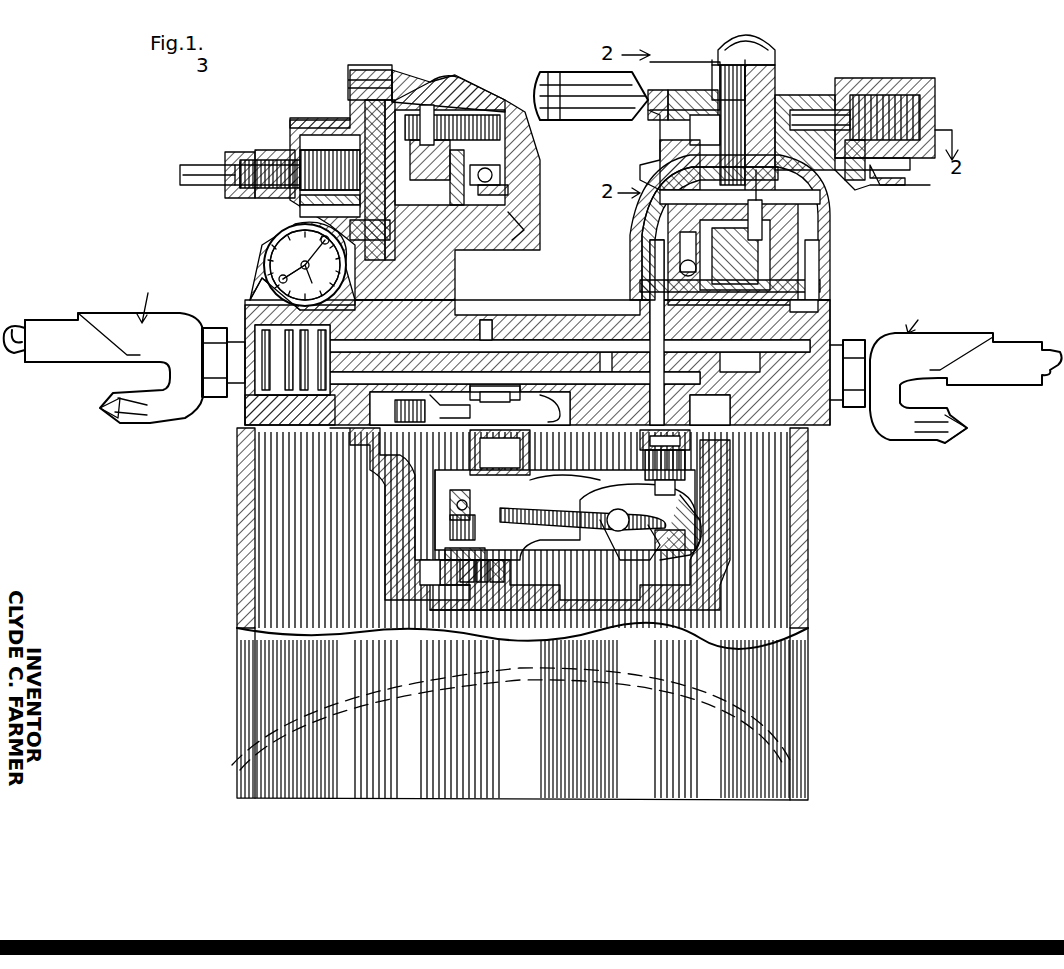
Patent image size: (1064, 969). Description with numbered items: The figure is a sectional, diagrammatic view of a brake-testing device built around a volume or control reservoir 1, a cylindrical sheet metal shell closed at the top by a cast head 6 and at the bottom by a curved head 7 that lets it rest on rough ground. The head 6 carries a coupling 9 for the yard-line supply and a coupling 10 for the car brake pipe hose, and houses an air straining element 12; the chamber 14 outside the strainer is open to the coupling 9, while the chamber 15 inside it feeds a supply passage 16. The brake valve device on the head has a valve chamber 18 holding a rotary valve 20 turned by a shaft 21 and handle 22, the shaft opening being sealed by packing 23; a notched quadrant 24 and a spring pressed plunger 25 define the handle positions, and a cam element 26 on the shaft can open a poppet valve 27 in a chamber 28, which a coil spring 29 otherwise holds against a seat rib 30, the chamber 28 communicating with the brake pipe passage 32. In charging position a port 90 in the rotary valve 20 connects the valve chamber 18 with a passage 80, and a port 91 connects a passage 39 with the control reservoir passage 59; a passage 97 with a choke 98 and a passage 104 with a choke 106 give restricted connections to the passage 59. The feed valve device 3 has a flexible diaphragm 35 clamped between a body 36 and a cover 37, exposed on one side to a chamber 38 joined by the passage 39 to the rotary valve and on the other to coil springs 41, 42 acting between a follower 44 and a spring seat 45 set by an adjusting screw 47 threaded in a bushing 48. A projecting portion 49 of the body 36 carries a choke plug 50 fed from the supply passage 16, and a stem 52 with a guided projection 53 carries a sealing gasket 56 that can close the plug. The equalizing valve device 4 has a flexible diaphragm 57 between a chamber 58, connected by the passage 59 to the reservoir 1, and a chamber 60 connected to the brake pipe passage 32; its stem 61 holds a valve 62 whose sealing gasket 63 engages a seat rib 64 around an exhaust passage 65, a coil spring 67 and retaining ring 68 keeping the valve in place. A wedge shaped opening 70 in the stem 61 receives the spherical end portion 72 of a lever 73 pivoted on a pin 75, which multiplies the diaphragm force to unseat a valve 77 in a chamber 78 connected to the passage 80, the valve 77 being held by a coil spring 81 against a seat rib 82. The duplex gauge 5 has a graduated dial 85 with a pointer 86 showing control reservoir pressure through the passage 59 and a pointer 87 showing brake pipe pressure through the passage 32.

The volume or control reservoir 1 is at (234, 593).
The feed valve device 3 is at (520, 222).
The equalizing valve device 4 is at (425, 566).
The duplex gauge 5 is at (258, 262).
The head 6 is at (560, 372).
The curved head 7 is at (262, 716).
The coupling 9 is at (88, 355).
The coupling 10 is at (1040, 385).
The air straining element 12 is at (262, 400).
The chamber 14 is at (215, 328).
The chamber 15 is at (262, 422).
The supply passage 16 is at (418, 340).
The valve chamber 18 is at (640, 200).
The rotary valve 20 is at (668, 242).
The shaft 21 is at (672, 130).
The handle 22 is at (548, 88).
The packing 23 is at (700, 170).
The quadrant 24 is at (670, 88).
The spring pressed plunger 25 is at (652, 90).
The cam element 26 is at (778, 95).
The poppet valve 27 is at (840, 95).
The chamber 28 is at (860, 190).
The coil spring 29 is at (900, 95).
The seat rib 30 is at (900, 188).
The brake pipe passage 32 is at (648, 380).
The flexible diaphragm 35 is at (470, 95).
The body 36 is at (478, 130).
The cover 37 is at (310, 140).
The chamber 38 is at (430, 120).
The passage 39 is at (500, 280).
The coil spring 41 is at (300, 212).
The coil spring 42 is at (300, 202).
The follower 44 is at (345, 130).
The spring seat 45 is at (268, 148).
The adjusting screw 47 is at (210, 165).
The bushing 48 is at (235, 152).
The projecting portion 49 is at (486, 112).
The choke plug 50 is at (500, 170).
The stem 52 is at (500, 112).
The projection 53 is at (510, 188).
The sealing gasket 56 is at (540, 180).
The flexible diaphragm 57 is at (395, 490).
The chamber 58 is at (400, 408).
The passage 59 is at (385, 392).
The chamber 60 is at (436, 480).
The stem 61 is at (438, 495).
The valve 62 is at (520, 580).
The sealing gasket 63 is at (530, 600).
The seat rib 64 is at (545, 610).
The exhaust passage 65 is at (496, 582).
The coil spring 67 is at (466, 580).
The retaining ring 68 is at (482, 582).
The wedge shaped opening 70 is at (445, 555).
The spherical end portion 72 is at (500, 455).
The lever 73 is at (600, 512).
The pin 75 is at (612, 560).
The valve 77 is at (700, 520).
The chamber 78 is at (688, 470).
The passage 80 is at (630, 295).
The coil spring 81 is at (690, 450).
The seat rib 82 is at (690, 490).
The graduated dial 85 is at (265, 262).
The pointer 86 is at (280, 280).
The pointer 87 is at (260, 300).
The port 90 is at (670, 198).
The port 91 is at (748, 220).
The passage 97 is at (820, 280).
The choke 98 is at (820, 305).
The passage 104 is at (686, 232).
The choke 106 is at (715, 386).